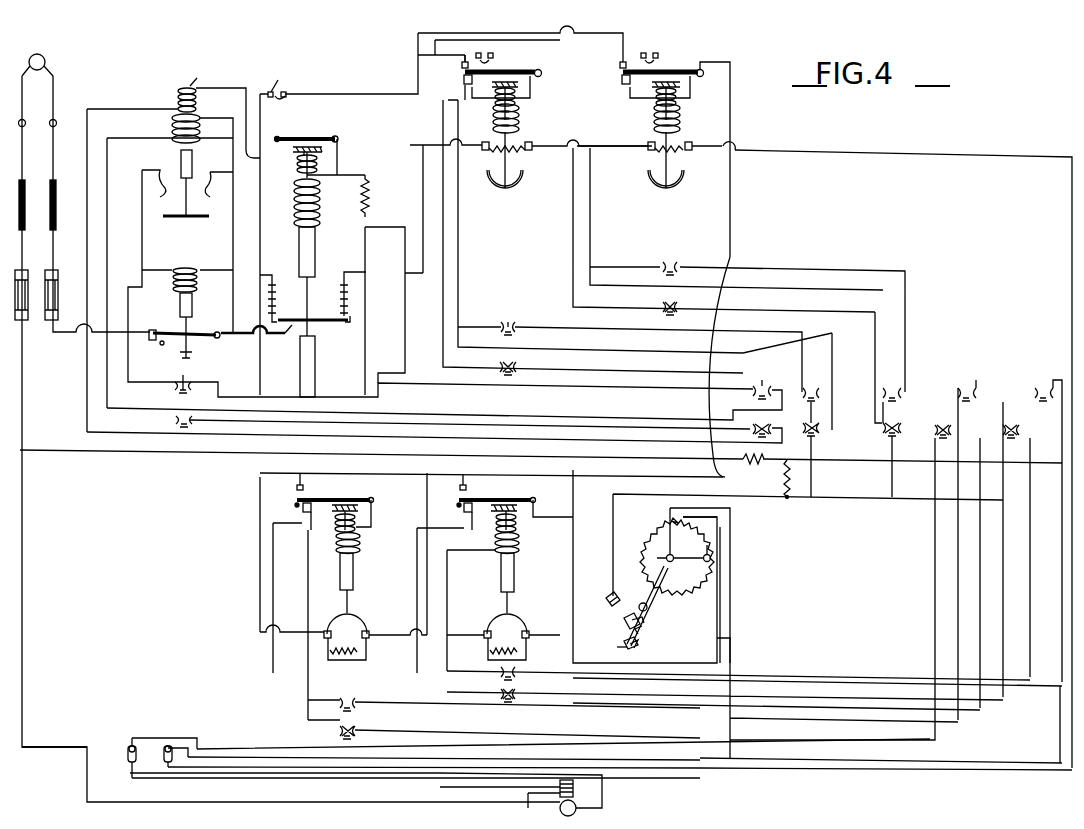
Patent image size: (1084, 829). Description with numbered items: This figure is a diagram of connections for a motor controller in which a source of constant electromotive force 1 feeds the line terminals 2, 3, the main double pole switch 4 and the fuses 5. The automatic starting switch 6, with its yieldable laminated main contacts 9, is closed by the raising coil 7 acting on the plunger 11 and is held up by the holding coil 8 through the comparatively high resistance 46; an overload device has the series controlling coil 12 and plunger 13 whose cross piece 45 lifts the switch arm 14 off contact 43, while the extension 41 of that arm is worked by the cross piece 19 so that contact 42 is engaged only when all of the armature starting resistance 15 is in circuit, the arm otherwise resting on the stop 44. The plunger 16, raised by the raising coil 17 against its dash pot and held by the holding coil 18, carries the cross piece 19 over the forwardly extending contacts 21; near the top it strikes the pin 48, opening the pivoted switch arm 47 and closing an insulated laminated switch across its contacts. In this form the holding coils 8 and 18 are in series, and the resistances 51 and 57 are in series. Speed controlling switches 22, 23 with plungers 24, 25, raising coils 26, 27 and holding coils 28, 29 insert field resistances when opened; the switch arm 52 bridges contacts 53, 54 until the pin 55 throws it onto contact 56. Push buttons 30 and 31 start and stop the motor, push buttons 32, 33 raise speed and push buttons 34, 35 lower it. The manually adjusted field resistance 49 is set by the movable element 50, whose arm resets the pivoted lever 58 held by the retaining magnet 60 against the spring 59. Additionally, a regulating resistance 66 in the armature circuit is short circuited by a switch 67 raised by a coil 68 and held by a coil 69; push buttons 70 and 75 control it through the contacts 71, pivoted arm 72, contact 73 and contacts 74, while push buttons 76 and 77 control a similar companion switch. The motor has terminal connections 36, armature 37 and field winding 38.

The source of constant electromotive force 1 is at (39, 55).
The line terminal 2 is at (27, 115).
The line terminal 3 is at (58, 115).
The main double pole switch 4 is at (22, 212).
The fuse 5 is at (46, 292).
The automatic starting switch 6 is at (178, 220).
The raising coil 7 is at (178, 128).
The holding coil 8 is at (178, 100).
The yieldable laminated main contact 9 is at (187, 193).
The plunger 11 is at (180, 158).
The series controlling coil 12 is at (195, 280).
The plunger 13 is at (192, 303).
The switch arm 14 is at (206, 338).
The armature starting resistance 15 is at (308, 298).
The plunger 16 is at (308, 247).
The raising coil 17 is at (295, 203).
The holding coil 18 is at (297, 165).
The cross piece 19 is at (326, 325).
The forwardly extending contact 21 is at (343, 308).
The speed controlling switch 22 is at (346, 637).
The speed controlling switch 23 is at (506, 637).
The plunger 24 is at (353, 578).
The plunger 25 is at (514, 583).
The raising coil 26 is at (361, 546).
The raising coil 27 is at (520, 546).
The holding coil 28 is at (356, 524).
The holding coil 29 is at (518, 524).
The push button switch 30 is at (189, 388).
The push button switch 31 is at (176, 426).
The push button switch 32 is at (348, 698).
The push button switch 33 is at (516, 683).
The push button 34 is at (357, 733).
The push button 35 is at (510, 705).
The terminal connection 36 is at (136, 757).
The armature 37 is at (578, 805).
The field winding 38 is at (578, 789).
The extension 41 is at (289, 333).
The contact 42 is at (155, 331).
The contact 43 is at (149, 341).
The stop 44 is at (160, 345).
The cross piece 45 is at (185, 364).
The resistance 46 is at (374, 196).
The pivoted switch arm 47 is at (326, 137).
The pin 48 is at (322, 152).
The resistance 49 is at (700, 583).
The movable element 50 is at (692, 546).
The resistance 51 is at (753, 468).
The switch arm 52 is at (498, 496).
The contact 53 is at (466, 514).
The contact 54 is at (457, 510).
The pin 55 is at (516, 505).
The contact 56 is at (466, 485).
The resistance 57 is at (787, 497).
The pivoted lever 58 is at (662, 575).
The spring 59 is at (650, 620).
The retaining magnet 60 is at (605, 600).
The regulating resistance 66 is at (522, 153).
The switch 67 is at (509, 183).
The raising coil 68 is at (516, 146).
The holding coil 69 is at (520, 97).
The push button switch 70 is at (507, 318).
The contact 71 is at (463, 83).
The pivoted arm 72 is at (515, 70).
The contact 73 is at (461, 66).
The contact 74 is at (492, 54).
The push button switch 75 is at (509, 358).
The push button switch 76 is at (669, 259).
The push button switch 77 is at (670, 299).